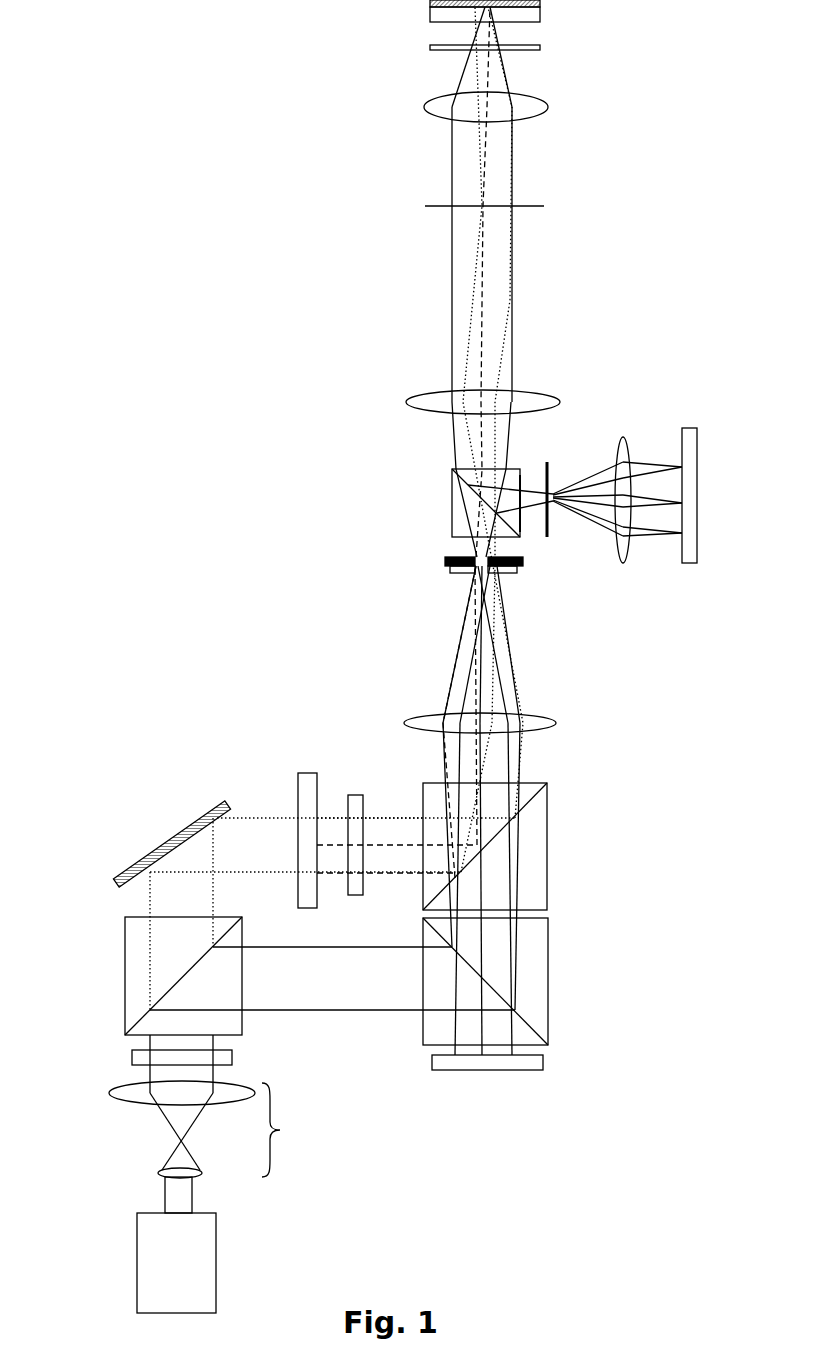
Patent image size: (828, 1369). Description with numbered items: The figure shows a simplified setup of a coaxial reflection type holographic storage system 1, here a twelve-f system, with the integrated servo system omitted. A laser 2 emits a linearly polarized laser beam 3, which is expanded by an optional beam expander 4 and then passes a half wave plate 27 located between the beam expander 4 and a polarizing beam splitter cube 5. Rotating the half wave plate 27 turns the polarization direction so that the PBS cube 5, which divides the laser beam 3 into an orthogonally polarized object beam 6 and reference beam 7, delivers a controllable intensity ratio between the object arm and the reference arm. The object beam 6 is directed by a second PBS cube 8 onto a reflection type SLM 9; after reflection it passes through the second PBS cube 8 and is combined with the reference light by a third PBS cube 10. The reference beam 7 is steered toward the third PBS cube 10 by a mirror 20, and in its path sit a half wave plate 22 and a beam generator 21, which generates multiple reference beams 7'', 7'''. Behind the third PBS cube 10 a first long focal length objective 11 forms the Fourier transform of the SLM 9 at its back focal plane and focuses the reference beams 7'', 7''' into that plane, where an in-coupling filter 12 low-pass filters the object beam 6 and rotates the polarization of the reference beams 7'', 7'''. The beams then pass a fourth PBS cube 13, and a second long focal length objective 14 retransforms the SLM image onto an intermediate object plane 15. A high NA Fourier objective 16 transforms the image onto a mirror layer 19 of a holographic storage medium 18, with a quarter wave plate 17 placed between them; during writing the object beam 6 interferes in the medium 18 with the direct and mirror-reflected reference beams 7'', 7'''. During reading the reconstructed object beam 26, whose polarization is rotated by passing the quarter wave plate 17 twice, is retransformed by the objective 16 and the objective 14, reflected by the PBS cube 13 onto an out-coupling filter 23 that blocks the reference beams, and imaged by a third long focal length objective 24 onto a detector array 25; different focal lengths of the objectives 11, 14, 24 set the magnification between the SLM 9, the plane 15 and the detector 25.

The holographic storage system 1 is at (196, 124).
The laser 2 is at (135, 1268).
The laser beam 3 is at (165, 1192).
The beam expander 4 is at (205, 1129).
The polarizing beam splitter cube 5 is at (117, 968).
The object beam 6 is at (333, 1008).
The reference beam 7 is at (336, 508).
The reference beam 7'' is at (370, 784).
The reference beam 7''' is at (403, 474).
The second PBS cube 8 is at (552, 972).
The reflection type SLM 9 is at (547, 1062).
The third PBS cube 10 is at (547, 833).
The first long focal length objective 11 is at (558, 720).
The in-coupling filter 12 is at (443, 560).
The fourth PBS cube 13 is at (447, 500).
The second long focal length objective 14 is at (403, 402).
The intermediate object plane 15 is at (422, 205).
The high NA Fourier objective 16 is at (422, 107).
The quarter wave plate 17 is at (423, 50).
The holographic storage medium 18 is at (545, 13).
The mirror layer 19 is at (422, 5).
The mirror 20 is at (172, 833).
The beam generator 21 is at (300, 772).
The half wave plate 22 is at (357, 795).
The out-coupling filter 23 is at (557, 458).
The third long focal length objective 24 is at (620, 567).
The detector array 25 is at (688, 567).
The reconstructed object beam 26 is at (528, 508).
The half wave plate 27 is at (122, 1058).